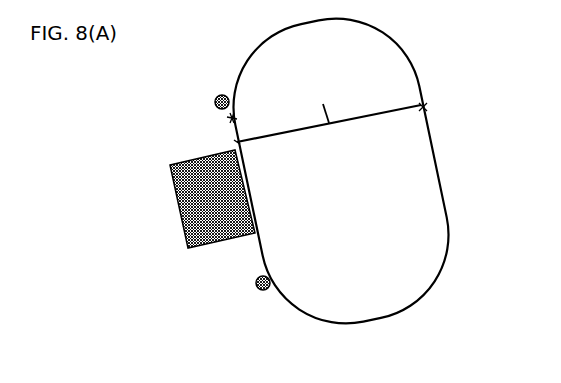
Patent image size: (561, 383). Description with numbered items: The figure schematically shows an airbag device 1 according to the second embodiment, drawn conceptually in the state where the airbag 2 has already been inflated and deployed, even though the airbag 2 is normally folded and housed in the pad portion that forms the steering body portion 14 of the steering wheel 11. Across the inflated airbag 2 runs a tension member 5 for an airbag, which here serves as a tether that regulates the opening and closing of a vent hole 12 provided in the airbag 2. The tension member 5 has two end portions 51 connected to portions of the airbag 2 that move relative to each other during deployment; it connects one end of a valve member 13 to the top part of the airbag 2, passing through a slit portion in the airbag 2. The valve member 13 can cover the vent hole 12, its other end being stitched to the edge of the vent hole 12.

The airbag device 1 is at (451, 29).
The airbag 2 is at (435, 157).
The tension member for an airbag 5 is at (357, 117).
The end portion 51 is at (251, 149).
The steering wheel 11 is at (255, 283).
The vent hole 12 is at (240, 122).
The valve member 13 is at (228, 125).
The steering body portion 14 is at (179, 208).